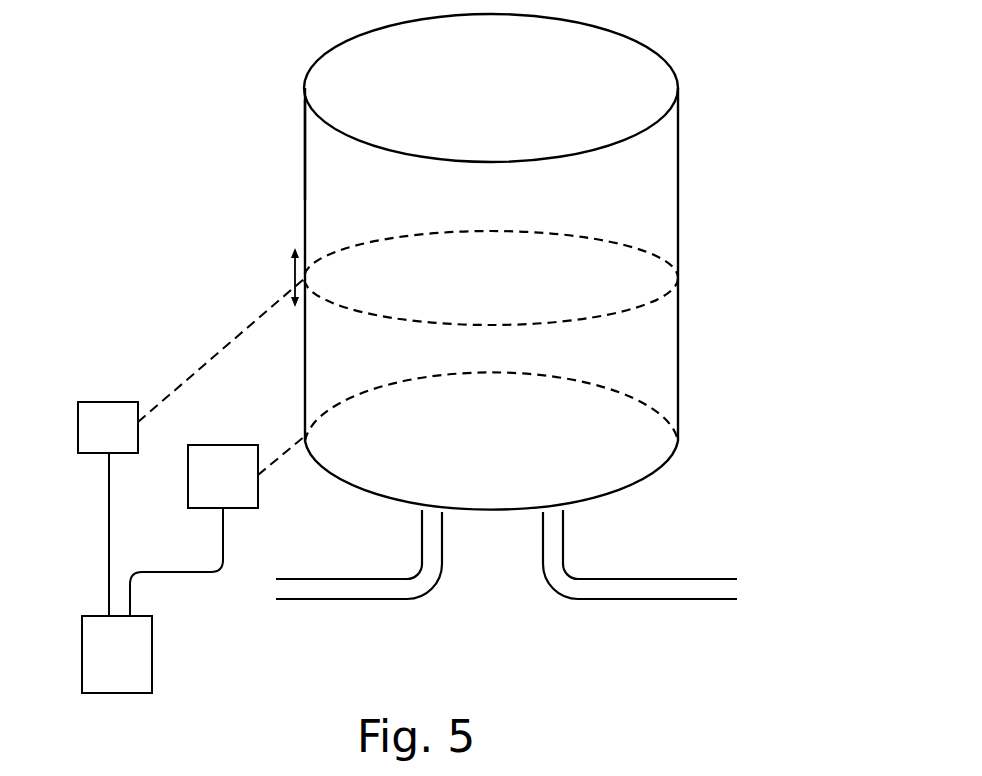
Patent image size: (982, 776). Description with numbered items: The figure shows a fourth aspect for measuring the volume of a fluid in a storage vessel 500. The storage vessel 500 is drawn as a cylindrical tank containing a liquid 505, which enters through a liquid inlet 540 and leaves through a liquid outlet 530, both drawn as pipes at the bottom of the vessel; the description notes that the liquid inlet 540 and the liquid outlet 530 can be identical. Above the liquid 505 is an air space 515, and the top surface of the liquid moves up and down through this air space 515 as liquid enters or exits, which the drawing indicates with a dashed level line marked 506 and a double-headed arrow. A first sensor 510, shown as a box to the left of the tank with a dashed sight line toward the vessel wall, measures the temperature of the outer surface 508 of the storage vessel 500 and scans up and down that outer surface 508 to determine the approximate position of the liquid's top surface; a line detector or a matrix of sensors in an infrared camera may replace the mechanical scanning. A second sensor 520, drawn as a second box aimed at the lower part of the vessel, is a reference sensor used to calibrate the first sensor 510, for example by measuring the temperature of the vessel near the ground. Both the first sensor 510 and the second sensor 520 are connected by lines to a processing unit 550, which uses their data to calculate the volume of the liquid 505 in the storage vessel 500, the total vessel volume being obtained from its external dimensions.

The storage vessel 500 is at (678, 164).
The liquid 505 is at (491, 410).
The liquid level 506 is at (678, 290).
The outer surface 508 is at (305, 143).
The first sensor 510 is at (105, 408).
The air space 515 is at (495, 195).
The second sensor 520 is at (232, 498).
The liquid outlet 530 is at (688, 583).
The liquid inlet 540 is at (370, 583).
The processing unit 550 is at (117, 654).